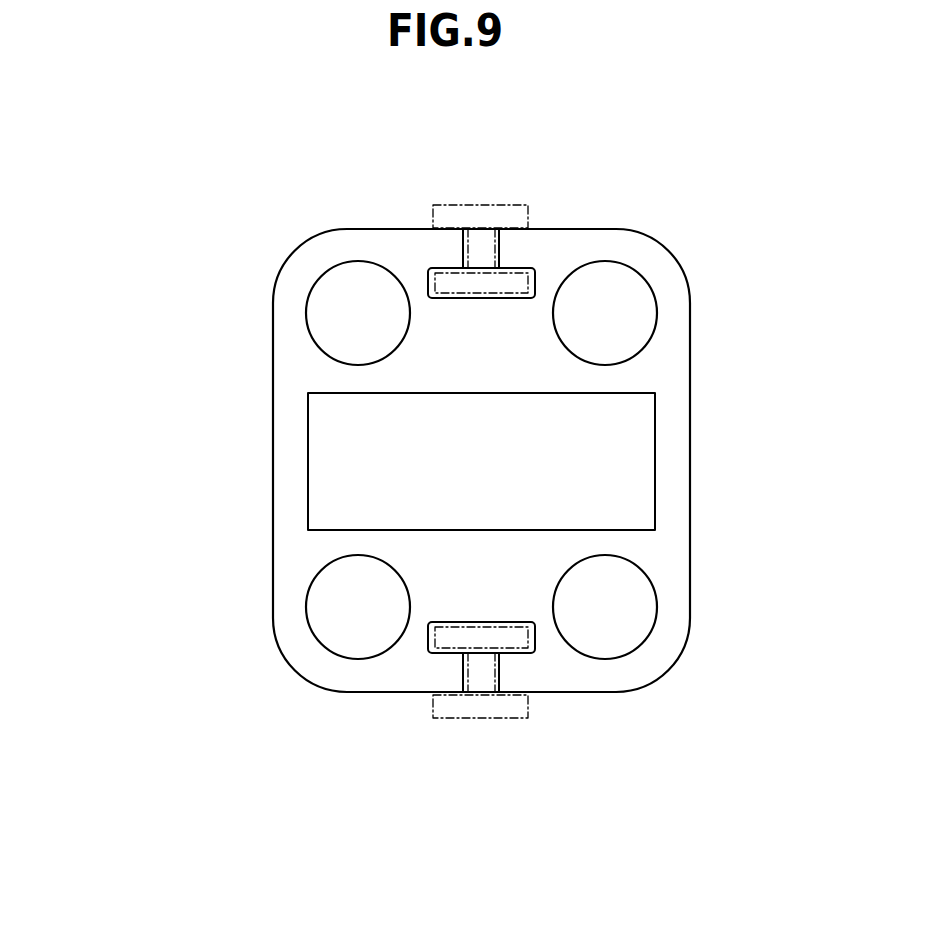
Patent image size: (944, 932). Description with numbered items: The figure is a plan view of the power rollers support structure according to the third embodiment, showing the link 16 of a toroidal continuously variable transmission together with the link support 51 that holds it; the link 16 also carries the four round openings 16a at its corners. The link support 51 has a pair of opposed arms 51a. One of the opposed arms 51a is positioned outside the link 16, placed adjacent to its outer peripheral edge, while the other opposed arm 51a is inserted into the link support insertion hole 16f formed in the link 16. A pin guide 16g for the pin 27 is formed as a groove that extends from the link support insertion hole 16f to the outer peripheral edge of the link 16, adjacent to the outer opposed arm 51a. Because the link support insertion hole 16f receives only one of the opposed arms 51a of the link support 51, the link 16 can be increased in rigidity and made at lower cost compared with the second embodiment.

The link 16 is at (262, 432).
The through holes of body plate (alternatively 17a) 16a is at (330, 265).
The link support insertion hole 16f is at (532, 283).
The pin guide 16g is at (495, 250).
The pin 27 is at (463, 252).
The link support 51 is at (489, 196).
The opposed arm 51a is at (465, 212).